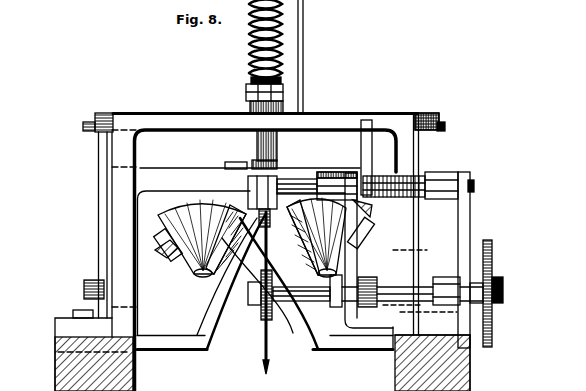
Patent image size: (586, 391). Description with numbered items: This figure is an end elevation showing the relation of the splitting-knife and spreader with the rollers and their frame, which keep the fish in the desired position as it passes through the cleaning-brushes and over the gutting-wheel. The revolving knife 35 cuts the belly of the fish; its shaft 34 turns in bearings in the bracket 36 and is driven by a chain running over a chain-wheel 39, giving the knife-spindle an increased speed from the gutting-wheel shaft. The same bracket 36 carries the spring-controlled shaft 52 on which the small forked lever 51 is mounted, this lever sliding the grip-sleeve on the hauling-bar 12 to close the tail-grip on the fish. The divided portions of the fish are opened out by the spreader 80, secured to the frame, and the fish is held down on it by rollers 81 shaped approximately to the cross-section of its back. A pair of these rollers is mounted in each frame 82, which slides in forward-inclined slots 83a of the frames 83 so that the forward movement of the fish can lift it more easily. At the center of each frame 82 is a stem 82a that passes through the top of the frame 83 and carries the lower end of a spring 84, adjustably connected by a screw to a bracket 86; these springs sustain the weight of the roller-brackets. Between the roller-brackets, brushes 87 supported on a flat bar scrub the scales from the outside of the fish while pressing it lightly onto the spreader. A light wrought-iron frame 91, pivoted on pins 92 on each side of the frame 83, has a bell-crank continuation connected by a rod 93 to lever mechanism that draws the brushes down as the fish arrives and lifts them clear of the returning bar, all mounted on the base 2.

The base 2 is at (57, 366).
The hauling-bar 12 is at (271, 180).
The shaft 34 is at (292, 305).
The revolving knife 35 is at (264, 346).
The bracket 36 is at (370, 332).
The chain-wheel 39 is at (493, 251).
The forked lever 51 is at (250, 180).
The shaft 52 is at (291, 187).
The spreader 80 is at (218, 316).
The rollers 81 is at (187, 257).
The frame 82 is at (442, 126).
The stem 82a is at (262, 147).
The frame 83 is at (345, 114).
The slot 83a is at (402, 155).
The spring 84 is at (251, 40).
The bracket 86 is at (304, 30).
The brushes 87 is at (165, 236).
The frame 91 is at (105, 112).
The pin 92 is at (83, 126).
The rod 93 is at (84, 291).